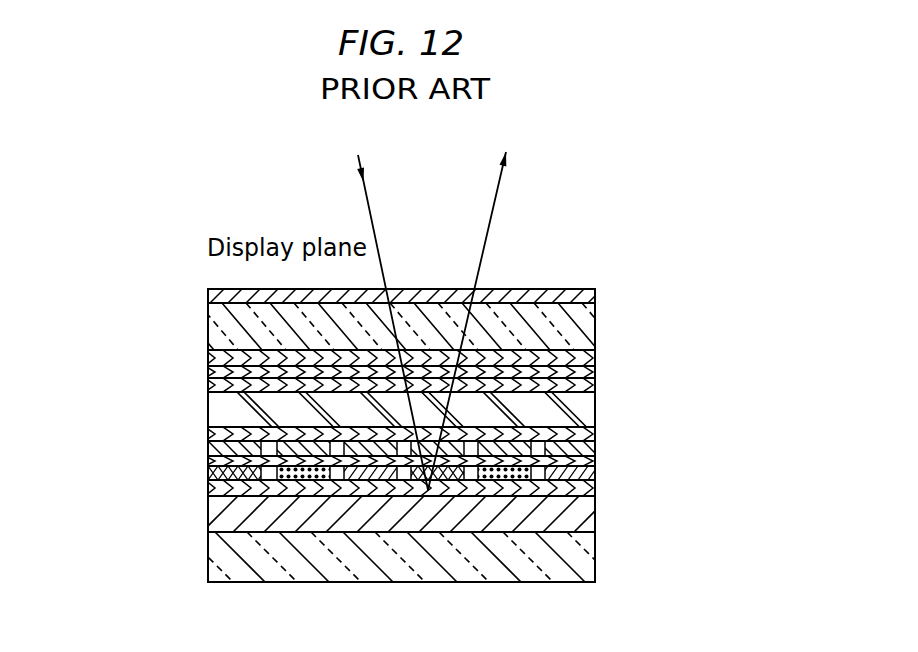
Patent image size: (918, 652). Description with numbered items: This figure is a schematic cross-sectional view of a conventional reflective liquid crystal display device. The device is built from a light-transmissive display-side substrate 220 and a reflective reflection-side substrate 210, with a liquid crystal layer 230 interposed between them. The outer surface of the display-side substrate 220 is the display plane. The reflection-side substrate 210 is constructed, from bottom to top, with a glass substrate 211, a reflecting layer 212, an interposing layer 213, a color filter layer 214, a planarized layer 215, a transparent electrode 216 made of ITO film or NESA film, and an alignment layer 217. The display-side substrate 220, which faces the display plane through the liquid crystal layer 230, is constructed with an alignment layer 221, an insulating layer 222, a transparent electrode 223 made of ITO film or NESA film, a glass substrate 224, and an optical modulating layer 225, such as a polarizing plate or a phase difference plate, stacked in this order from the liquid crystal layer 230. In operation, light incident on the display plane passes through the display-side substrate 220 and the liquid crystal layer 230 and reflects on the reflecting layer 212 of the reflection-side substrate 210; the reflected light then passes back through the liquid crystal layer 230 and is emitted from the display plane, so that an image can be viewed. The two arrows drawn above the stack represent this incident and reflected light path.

The reflection-side substrate 210 is at (110, 368).
The glass substrate 211 is at (207, 557).
The reflecting layer 212 is at (207, 513).
The interposing layer 213 is at (207, 492).
The color filter layer 214 is at (207, 478).
The planarized layer 215 is at (207, 461).
The transparent electrode 216 is at (207, 450).
The alignment layer 217 is at (207, 432).
The display-side substrate 220 is at (693, 255).
The alignment layer 221 is at (597, 388).
The insulating layer 222 is at (597, 368).
The transparent electrode 223 is at (597, 358).
The glass substrate 224 is at (598, 323).
The optical modulating layer 225 is at (598, 296).
The liquid crystal layer 230 is at (597, 410).